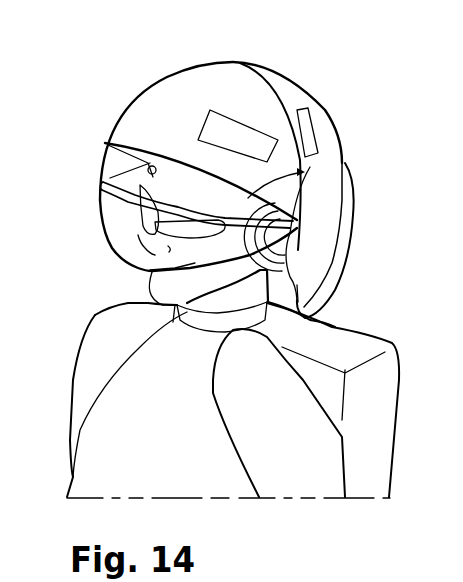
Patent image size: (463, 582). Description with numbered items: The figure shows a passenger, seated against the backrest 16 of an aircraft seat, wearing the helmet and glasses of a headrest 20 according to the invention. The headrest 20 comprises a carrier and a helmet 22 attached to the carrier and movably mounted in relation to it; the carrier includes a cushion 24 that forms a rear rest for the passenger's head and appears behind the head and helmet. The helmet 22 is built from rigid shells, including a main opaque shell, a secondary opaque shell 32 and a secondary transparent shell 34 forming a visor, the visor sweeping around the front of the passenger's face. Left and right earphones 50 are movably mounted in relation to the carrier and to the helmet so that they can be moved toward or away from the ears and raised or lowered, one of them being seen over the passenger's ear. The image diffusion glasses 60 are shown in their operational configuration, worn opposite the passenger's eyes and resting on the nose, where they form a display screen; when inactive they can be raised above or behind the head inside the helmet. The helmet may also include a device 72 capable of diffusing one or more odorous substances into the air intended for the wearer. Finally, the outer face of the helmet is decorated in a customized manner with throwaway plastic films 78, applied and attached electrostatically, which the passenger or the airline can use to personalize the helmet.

The backrest 16 is at (362, 417).
The headrest 20 is at (365, 157).
The helmet 22 is at (295, 97).
The cushion 24 is at (329, 280).
The secondary opaque shell 32 is at (172, 106).
The secondary transparent shell 34 is at (100, 213).
The earphones 50 is at (282, 247).
The image diffusion glasses 60 is at (133, 220).
The device 72 is at (462, 450).
The throwaway plastic film 78 is at (230, 125).